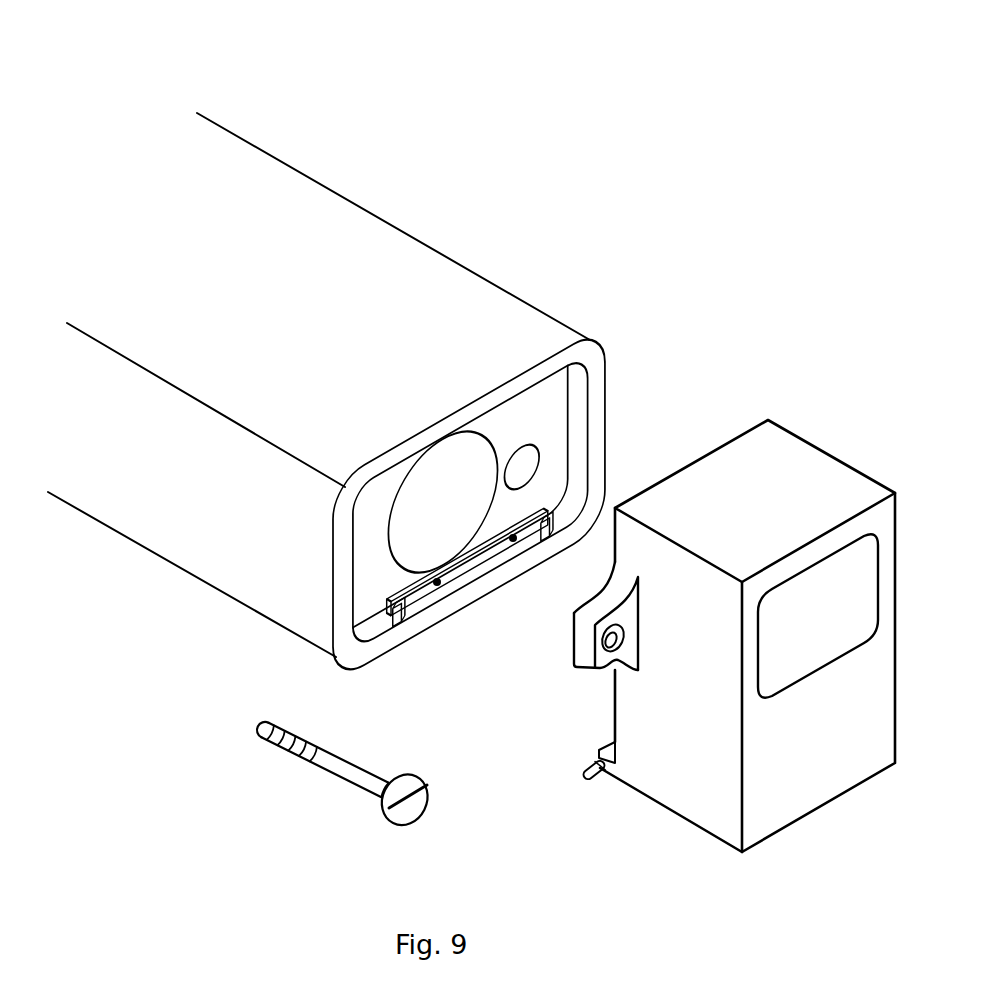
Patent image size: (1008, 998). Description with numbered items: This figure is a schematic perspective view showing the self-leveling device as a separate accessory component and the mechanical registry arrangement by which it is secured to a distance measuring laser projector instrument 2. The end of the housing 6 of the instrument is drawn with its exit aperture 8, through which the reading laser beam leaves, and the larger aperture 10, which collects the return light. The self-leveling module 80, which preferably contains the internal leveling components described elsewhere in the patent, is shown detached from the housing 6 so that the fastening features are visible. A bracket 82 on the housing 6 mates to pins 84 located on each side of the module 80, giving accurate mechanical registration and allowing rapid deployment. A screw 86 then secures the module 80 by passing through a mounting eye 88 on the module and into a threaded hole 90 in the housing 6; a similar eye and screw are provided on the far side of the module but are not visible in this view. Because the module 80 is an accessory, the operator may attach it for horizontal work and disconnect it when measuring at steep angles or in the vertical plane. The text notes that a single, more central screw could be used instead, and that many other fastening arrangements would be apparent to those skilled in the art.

The distance measuring instrument 2 is at (268, 100).
The housing 6 is at (313, 181).
The exit aperture 8 is at (541, 460).
The aperture 10 is at (390, 545).
The self-leveling module 80 is at (678, 818).
The bracket 82 is at (398, 624).
The pins 84 is at (583, 779).
The screw 86 is at (343, 780).
The eye 88 is at (573, 642).
The threaded hole 90 is at (370, 525).